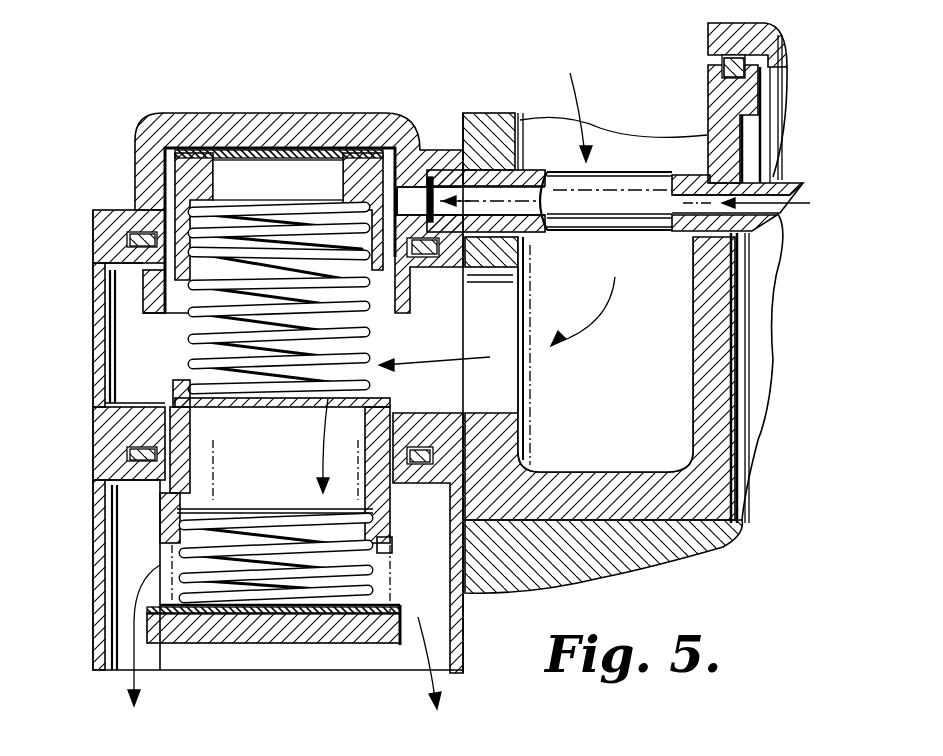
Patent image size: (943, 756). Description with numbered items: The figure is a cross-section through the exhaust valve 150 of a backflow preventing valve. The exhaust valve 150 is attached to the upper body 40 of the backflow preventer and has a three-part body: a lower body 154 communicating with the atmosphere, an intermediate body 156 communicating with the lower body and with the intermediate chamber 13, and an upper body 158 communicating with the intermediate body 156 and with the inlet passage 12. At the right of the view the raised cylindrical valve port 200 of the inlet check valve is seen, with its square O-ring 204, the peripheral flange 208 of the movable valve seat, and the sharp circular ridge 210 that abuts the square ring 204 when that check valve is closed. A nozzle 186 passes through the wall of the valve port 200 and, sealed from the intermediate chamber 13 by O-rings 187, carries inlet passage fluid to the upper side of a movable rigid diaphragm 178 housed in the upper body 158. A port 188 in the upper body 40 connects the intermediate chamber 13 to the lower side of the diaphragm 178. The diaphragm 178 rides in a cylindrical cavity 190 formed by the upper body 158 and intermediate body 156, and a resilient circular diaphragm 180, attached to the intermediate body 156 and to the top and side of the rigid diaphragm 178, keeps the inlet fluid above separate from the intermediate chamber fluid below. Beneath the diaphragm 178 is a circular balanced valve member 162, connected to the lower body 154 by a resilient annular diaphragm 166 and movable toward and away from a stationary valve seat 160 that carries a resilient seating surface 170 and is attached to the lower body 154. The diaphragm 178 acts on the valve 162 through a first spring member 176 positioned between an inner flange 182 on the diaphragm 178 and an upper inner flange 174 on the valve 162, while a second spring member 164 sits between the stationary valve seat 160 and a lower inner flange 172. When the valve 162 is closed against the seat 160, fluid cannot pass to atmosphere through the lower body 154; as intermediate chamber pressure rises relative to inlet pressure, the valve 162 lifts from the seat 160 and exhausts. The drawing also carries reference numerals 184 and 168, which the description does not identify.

The inlet passage 12 is at (750, 378).
The intermediate chamber 13 is at (642, 443).
The upper body 40 is at (503, 252).
The exhaust valve 150 is at (196, 108).
The lower body 154 is at (93, 575).
The intermediate body 156 is at (95, 277).
The upper body 158 is at (140, 120).
The stationary valve seat 160 is at (236, 630).
The balanced valve member 162 is at (175, 389).
The second spring member 164 is at (192, 606).
The resilient annular diaphragm 166 is at (397, 493).
The piston lip 168 is at (383, 540).
The resilient seating surface 170 is at (354, 612).
The lower inner flange 172 is at (182, 503).
The upper inner flange 174 is at (370, 393).
The first spring member 176 is at (188, 347).
The movable rigid diaphragm 178 is at (390, 152).
The resilient circular diaphragm 180 is at (323, 150).
The inner flange 182 is at (225, 203).
The seal 184 is at (243, 116).
The nozzle 186 is at (687, 203).
The O-rings 187 is at (472, 178).
The port 188 is at (505, 385).
The cylindrical cavity 190 is at (392, 318).
The valve port 200 is at (722, 444).
The square O-ring 204 is at (727, 92).
The peripheral flange 208 is at (707, 37).
The sharp circular ridge 210 is at (738, 58).